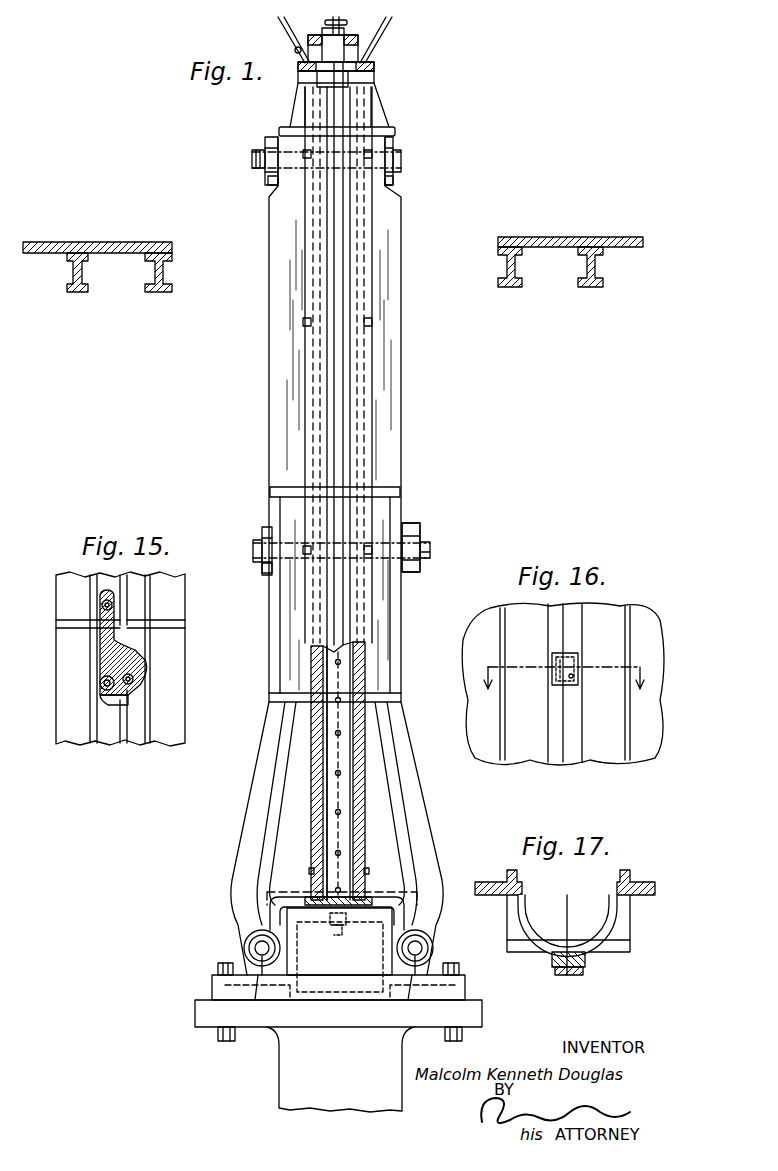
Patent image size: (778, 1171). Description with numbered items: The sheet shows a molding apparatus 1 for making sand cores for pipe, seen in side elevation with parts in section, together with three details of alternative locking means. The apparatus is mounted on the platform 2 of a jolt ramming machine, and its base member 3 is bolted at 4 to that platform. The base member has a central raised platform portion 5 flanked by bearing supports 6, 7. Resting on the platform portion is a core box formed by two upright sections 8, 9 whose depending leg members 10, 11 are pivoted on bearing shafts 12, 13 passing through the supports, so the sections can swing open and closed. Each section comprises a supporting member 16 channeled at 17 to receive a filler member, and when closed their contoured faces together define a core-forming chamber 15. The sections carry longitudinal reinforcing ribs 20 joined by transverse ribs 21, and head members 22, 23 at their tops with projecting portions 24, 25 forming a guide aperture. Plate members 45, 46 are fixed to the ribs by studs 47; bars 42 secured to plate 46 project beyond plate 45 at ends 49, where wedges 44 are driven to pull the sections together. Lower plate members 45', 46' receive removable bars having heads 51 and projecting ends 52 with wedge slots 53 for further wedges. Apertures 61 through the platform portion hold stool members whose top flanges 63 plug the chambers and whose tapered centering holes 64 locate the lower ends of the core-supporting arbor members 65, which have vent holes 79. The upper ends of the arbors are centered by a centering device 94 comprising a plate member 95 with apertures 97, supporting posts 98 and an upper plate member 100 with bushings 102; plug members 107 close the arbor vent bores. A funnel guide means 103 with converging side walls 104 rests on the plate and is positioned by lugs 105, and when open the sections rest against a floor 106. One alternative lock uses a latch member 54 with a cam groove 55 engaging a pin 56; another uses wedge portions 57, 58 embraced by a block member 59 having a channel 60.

In FIG. 1, the molding apparatus 1 is at (401, 404).
In FIG. 1, the platform 2 is at (195, 1012).
In FIG. 1, the base or bottom member 3 is at (212, 988).
In FIG. 1, the bolts 4 is at (218, 968).
In FIG. 1, the raised platform portion 5 is at (285, 901).
In FIG. 1, the bearing supports 6 is at (434, 948).
In FIG. 1, the bearing supports 7 is at (243, 948).
In FIG. 1, the core box section 8 is at (401, 605).
In FIG. 15, the core box section 8 is at (185, 693).
In FIG. 16, the core box section 8 is at (650, 742).
In FIG. 1, the core box section 9 is at (269, 608).
In FIG. 15, the core box section 9 is at (56, 695).
In FIG. 16, the core box section 9 is at (480, 752).
In FIG. 1, the leg members 10 is at (430, 912).
In FIG. 1, the leg members 11 is at (243, 920).
In FIG. 1, the bearing shaft 12 is at (412, 992).
In FIG. 1, the bearing shaft 13 is at (262, 1000).
In FIG. 1, the core-forming chamber 15 is at (312, 795).
In FIG. 17, the core-forming chamber 15 is at (590, 905).
In FIG. 16, the supporting member 16 is at (530, 752).
In FIG. 17, the supporting member 16 is at (628, 873).
In FIG. 16, the channel 17 is at (562, 668).
In FIG. 17, the channel 17 is at (615, 930).
In FIG. 1, the longitudinal reinforcing ribs 20 is at (392, 660).
In FIG. 16, the longitudinal reinforcing ribs 20 is at (470, 724).
In FIG. 17, the longitudinal reinforcing ribs 20 is at (480, 884).
In FIG. 1, the transverse ribs 21 is at (396, 131).
In FIG. 1, the head member 22 is at (376, 80).
In FIG. 1, the head member 23 is at (296, 80).
In FIG. 1, the projecting portion 24 is at (378, 92).
In FIG. 1, the projecting portion 25 is at (316, 84).
In FIG. 1, the bars 42 is at (401, 159).
In FIG. 1, the wedges 44 is at (265, 141).
In FIG. 1, the plate member 45 is at (407, 156).
In FIG. 1, the lower plate member 45' is at (422, 531).
In FIG. 1, the plate member 46 is at (246, 181).
In FIG. 1, the lower plate member 46' is at (247, 543).
In FIG. 1, the studs 47 is at (394, 181).
In FIG. 1, the projecting ends 49 is at (252, 159).
In FIG. 1, the heads 51 is at (253, 548).
In FIG. 1, the ends 52 is at (430, 545).
In FIG. 1, the wedge slots 53 is at (428, 555).
In FIG. 15, the latch member 54 is at (105, 653).
In FIG. 15, the cam groove 55 is at (133, 675).
In FIG. 15, the pin or post 56 is at (128, 698).
In FIG. 16, the wedge portion 57 is at (574, 656).
In FIG. 17, the wedge portion 57 is at (586, 965).
In FIG. 16, the wedge portion 58 is at (556, 653).
In FIG. 17, the wedge portion 58 is at (554, 966).
In FIG. 16, the block member 59 is at (556, 672).
In FIG. 17, the block member 59 is at (582, 975).
In FIG. 16, the channel 60 is at (575, 677).
In FIG. 17, the channel 60 is at (564, 975).
In FIG. 1, the apertures 61 is at (345, 925).
In FIG. 1, the top flange 63 is at (332, 920).
In FIG. 1, the centering holes 64 is at (338, 936).
In FIG. 1, the core-supporting arbor member 65 is at (326, 756).
In FIG. 1, the vent holes 79 is at (342, 812).
In FIG. 1, the centering device 94 is at (360, 45).
In FIG. 1, the plate member 95 is at (376, 65).
In FIG. 1, the apertures 97 is at (294, 52).
In FIG. 1, the supporting posts 98 is at (295, 43).
In FIG. 1, the plate member 100 is at (322, 30).
In FIG. 1, the bushings 102 is at (373, 33).
In FIG. 1, the core-forming material guide means 103 is at (373, 31).
In FIG. 1, the side walls 104 is at (360, 37).
In FIG. 1, the fingers or lugs 105 is at (372, 72).
In FIG. 1, the platform or floor 106 is at (527, 239).
In FIG. 1, the plug members 107 is at (343, 16).